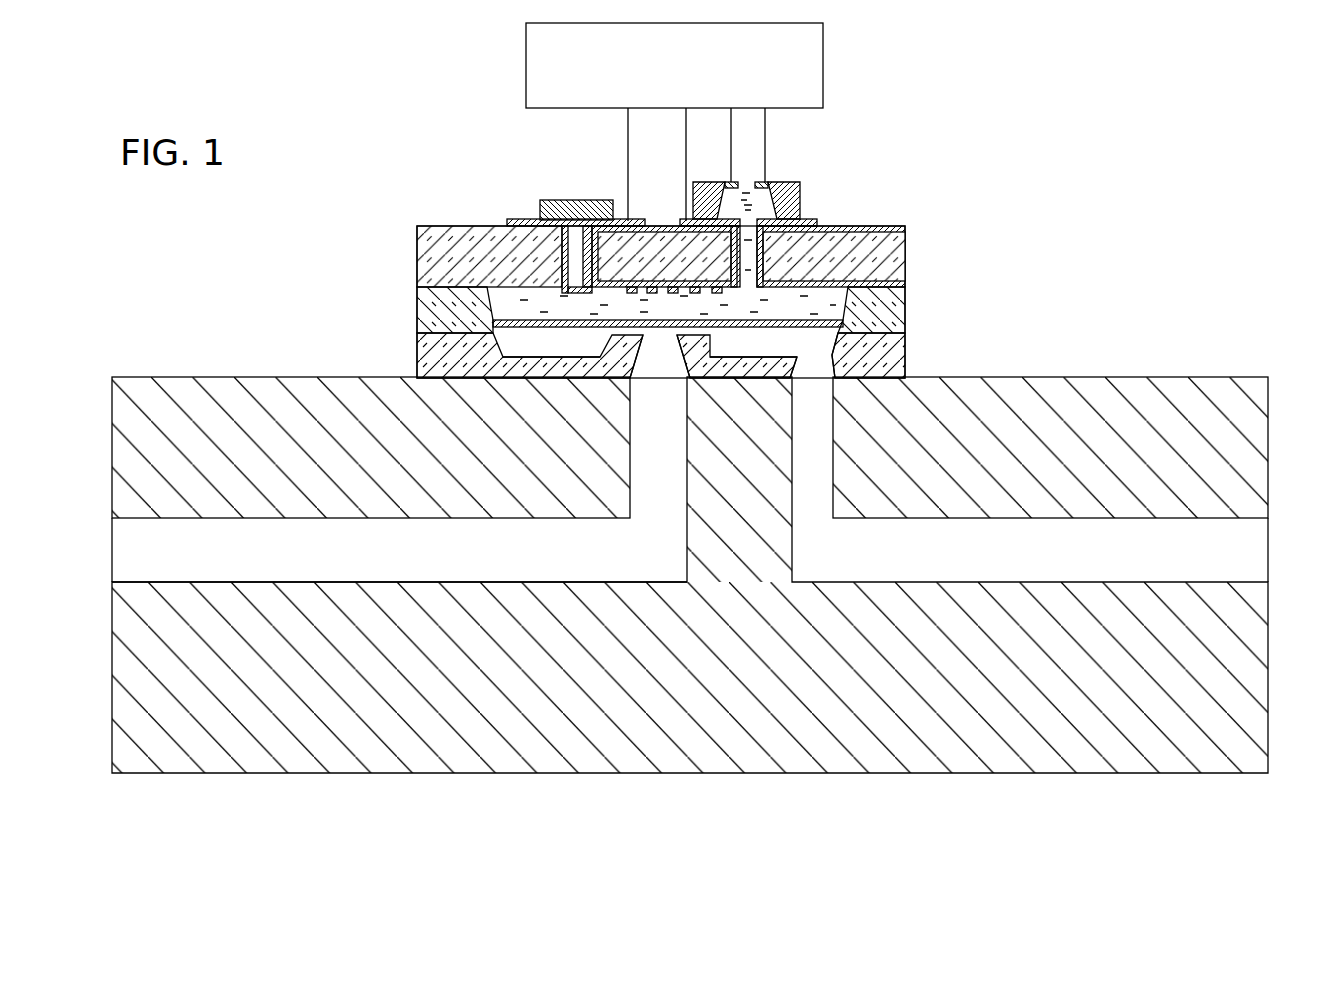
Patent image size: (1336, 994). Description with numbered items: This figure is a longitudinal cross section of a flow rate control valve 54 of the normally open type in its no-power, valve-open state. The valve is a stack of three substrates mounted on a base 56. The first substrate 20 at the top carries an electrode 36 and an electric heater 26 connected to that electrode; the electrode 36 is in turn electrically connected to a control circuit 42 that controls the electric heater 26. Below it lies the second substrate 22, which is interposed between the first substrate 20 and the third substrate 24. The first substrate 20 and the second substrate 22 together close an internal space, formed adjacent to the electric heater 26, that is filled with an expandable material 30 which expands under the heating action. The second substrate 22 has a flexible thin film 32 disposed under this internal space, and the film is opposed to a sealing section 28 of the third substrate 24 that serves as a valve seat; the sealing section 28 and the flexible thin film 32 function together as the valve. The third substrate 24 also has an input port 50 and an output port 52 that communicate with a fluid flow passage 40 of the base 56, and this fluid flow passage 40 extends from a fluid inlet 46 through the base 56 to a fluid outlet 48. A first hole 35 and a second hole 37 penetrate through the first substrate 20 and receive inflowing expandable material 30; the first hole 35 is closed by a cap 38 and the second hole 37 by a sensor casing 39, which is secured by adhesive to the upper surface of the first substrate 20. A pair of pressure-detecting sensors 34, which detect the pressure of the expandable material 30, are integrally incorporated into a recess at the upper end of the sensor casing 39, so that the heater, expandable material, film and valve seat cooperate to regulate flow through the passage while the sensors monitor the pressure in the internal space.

The first substrate 20 is at (417, 262).
The second substrate 22 is at (417, 305).
The third substrate 24 is at (417, 356).
The electric heater 26 is at (652, 287).
The sealing section 28 is at (693, 331).
The expandable material 30 is at (575, 263).
The flexible thin film 32 is at (792, 313).
The pressure-detecting sensors 34 is at (733, 183).
The first hole 35 is at (508, 304).
The electrode 36 is at (523, 220).
The second hole 37 is at (752, 258).
The cap 38 is at (563, 200).
The sensor casing 39 is at (800, 205).
The fluid flow passage 40 is at (399, 559).
The control circuit 42 is at (526, 66).
The fluid inlet 46 is at (150, 551).
The fluid outlet 48 is at (1230, 548).
The input port 50 is at (658, 365).
The output port 52 is at (813, 370).
The flow rate control valve 54 is at (898, 127).
The base 56 is at (1063, 366).